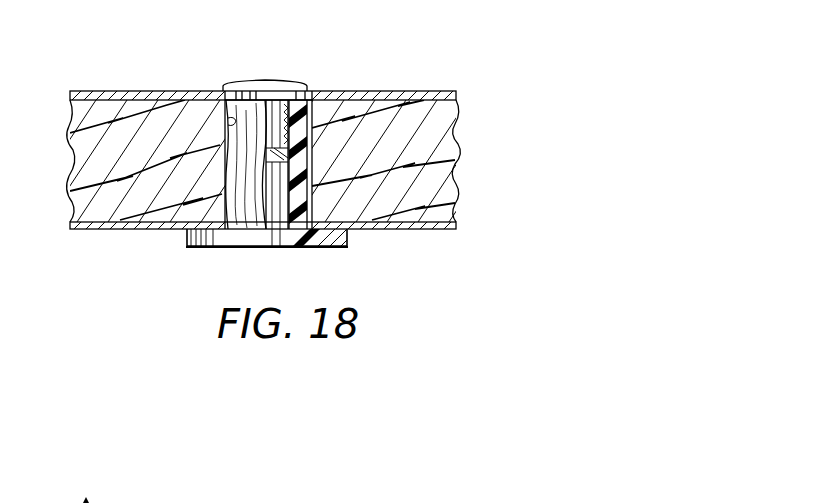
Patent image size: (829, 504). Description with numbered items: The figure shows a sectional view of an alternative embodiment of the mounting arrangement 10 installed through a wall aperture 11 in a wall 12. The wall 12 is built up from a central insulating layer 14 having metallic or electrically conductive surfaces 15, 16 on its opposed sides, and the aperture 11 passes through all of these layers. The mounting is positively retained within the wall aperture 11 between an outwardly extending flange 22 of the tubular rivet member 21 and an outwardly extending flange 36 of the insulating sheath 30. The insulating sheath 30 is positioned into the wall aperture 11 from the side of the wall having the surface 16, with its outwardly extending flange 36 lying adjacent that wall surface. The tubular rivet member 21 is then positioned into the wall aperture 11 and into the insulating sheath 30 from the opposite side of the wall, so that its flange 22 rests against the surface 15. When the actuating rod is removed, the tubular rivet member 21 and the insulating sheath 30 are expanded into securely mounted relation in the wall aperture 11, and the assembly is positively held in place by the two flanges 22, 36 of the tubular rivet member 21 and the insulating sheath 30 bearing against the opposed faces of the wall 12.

The mounting arrangement 10 is at (408, 51).
The wall aperture 11 is at (230, 112).
The wall 12 is at (458, 131).
The central insulating layer 14 is at (456, 152).
The metallic or electrically conductive surface 15 is at (420, 91).
The metallic or electrically conductive surface 16 is at (440, 229).
The tubular rivet member 21 is at (267, 108).
The outwardly extending flange 22 is at (292, 84).
The insulating sheath 30 is at (300, 197).
The outwardly extending flange 36 is at (212, 242).